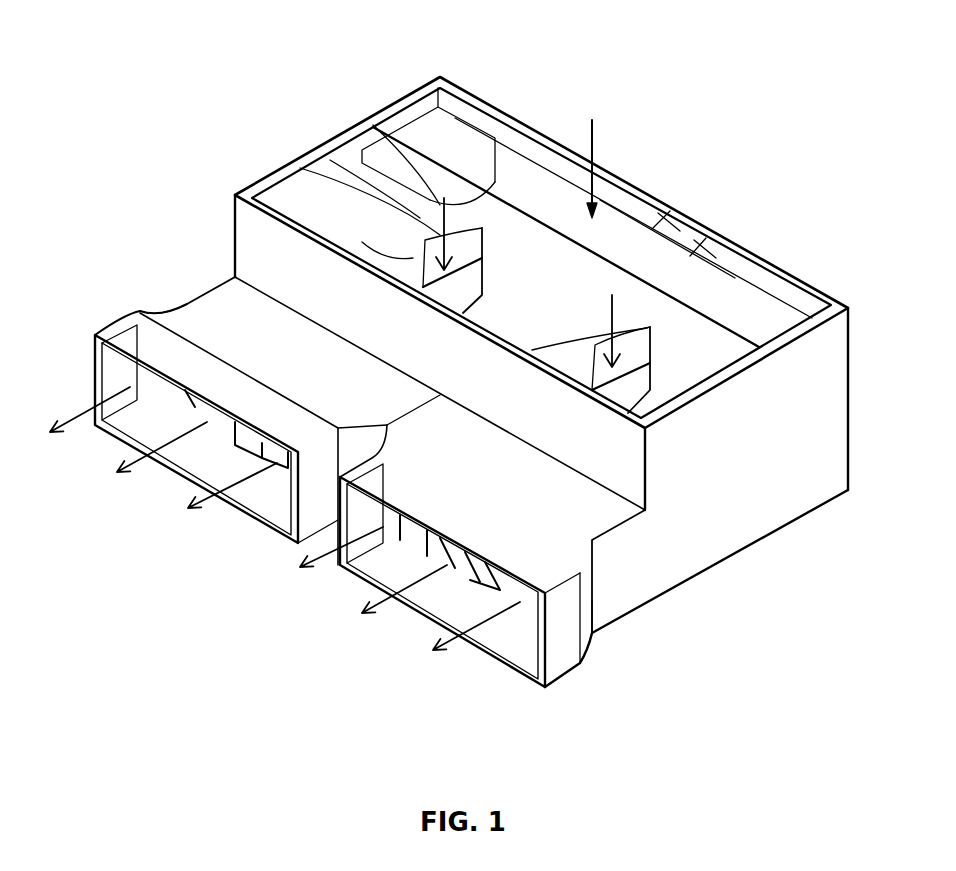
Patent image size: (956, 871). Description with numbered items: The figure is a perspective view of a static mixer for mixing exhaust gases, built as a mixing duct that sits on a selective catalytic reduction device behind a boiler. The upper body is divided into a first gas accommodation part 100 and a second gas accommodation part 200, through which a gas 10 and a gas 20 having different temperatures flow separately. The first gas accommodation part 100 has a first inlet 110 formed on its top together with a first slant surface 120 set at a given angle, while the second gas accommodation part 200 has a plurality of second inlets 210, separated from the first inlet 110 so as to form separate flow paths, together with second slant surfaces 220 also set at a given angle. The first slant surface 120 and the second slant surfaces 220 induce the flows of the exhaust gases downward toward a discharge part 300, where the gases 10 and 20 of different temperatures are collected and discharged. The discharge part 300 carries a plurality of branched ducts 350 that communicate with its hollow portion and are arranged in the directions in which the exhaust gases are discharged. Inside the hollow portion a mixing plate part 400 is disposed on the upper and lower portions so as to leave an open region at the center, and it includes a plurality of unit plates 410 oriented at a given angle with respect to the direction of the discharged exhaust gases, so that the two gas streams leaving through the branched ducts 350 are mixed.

The gas 10 is at (593, 140).
The gas 20 is at (497, 113).
The first gas accommodation part 100 is at (826, 203).
The first inlet 110 is at (673, 208).
The first slant surface 120 is at (753, 250).
The second gas accommodation part 200 is at (335, 49).
The second inlets 210 is at (277, 167).
The second slant surfaces 220 is at (340, 143).
The discharge part 300 is at (178, 273).
The branched ducts 350 is at (120, 323).
The mixing plate part 400 is at (233, 533).
The unit plates 410 is at (222, 452).